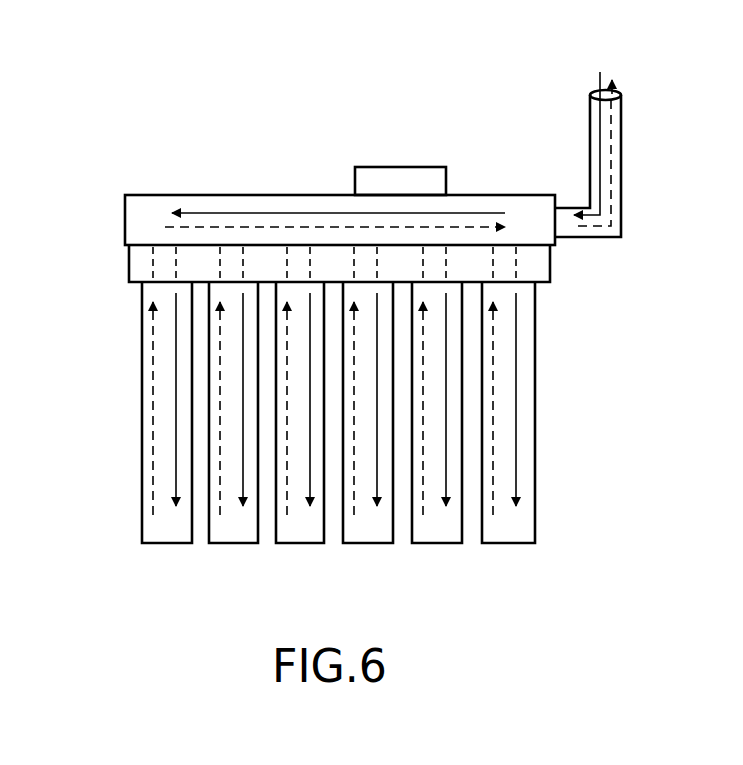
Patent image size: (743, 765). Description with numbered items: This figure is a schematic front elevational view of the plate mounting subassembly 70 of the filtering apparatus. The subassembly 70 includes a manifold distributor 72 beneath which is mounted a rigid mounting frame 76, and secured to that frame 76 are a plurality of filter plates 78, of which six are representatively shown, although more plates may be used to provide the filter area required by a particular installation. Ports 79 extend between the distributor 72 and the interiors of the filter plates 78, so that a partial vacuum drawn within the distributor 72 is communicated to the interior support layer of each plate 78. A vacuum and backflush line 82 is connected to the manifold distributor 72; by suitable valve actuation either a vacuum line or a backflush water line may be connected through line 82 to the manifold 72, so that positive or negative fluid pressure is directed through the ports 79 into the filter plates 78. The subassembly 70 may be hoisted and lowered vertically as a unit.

The plate mounting subassembly 70 is at (230, 175).
The manifold distributor 72 is at (162, 202).
The rigid mounting frame 76 is at (550, 262).
The filter plates 78 is at (315, 545).
The ports 79 is at (155, 264).
The vacuum and backflush line 82 is at (623, 134).